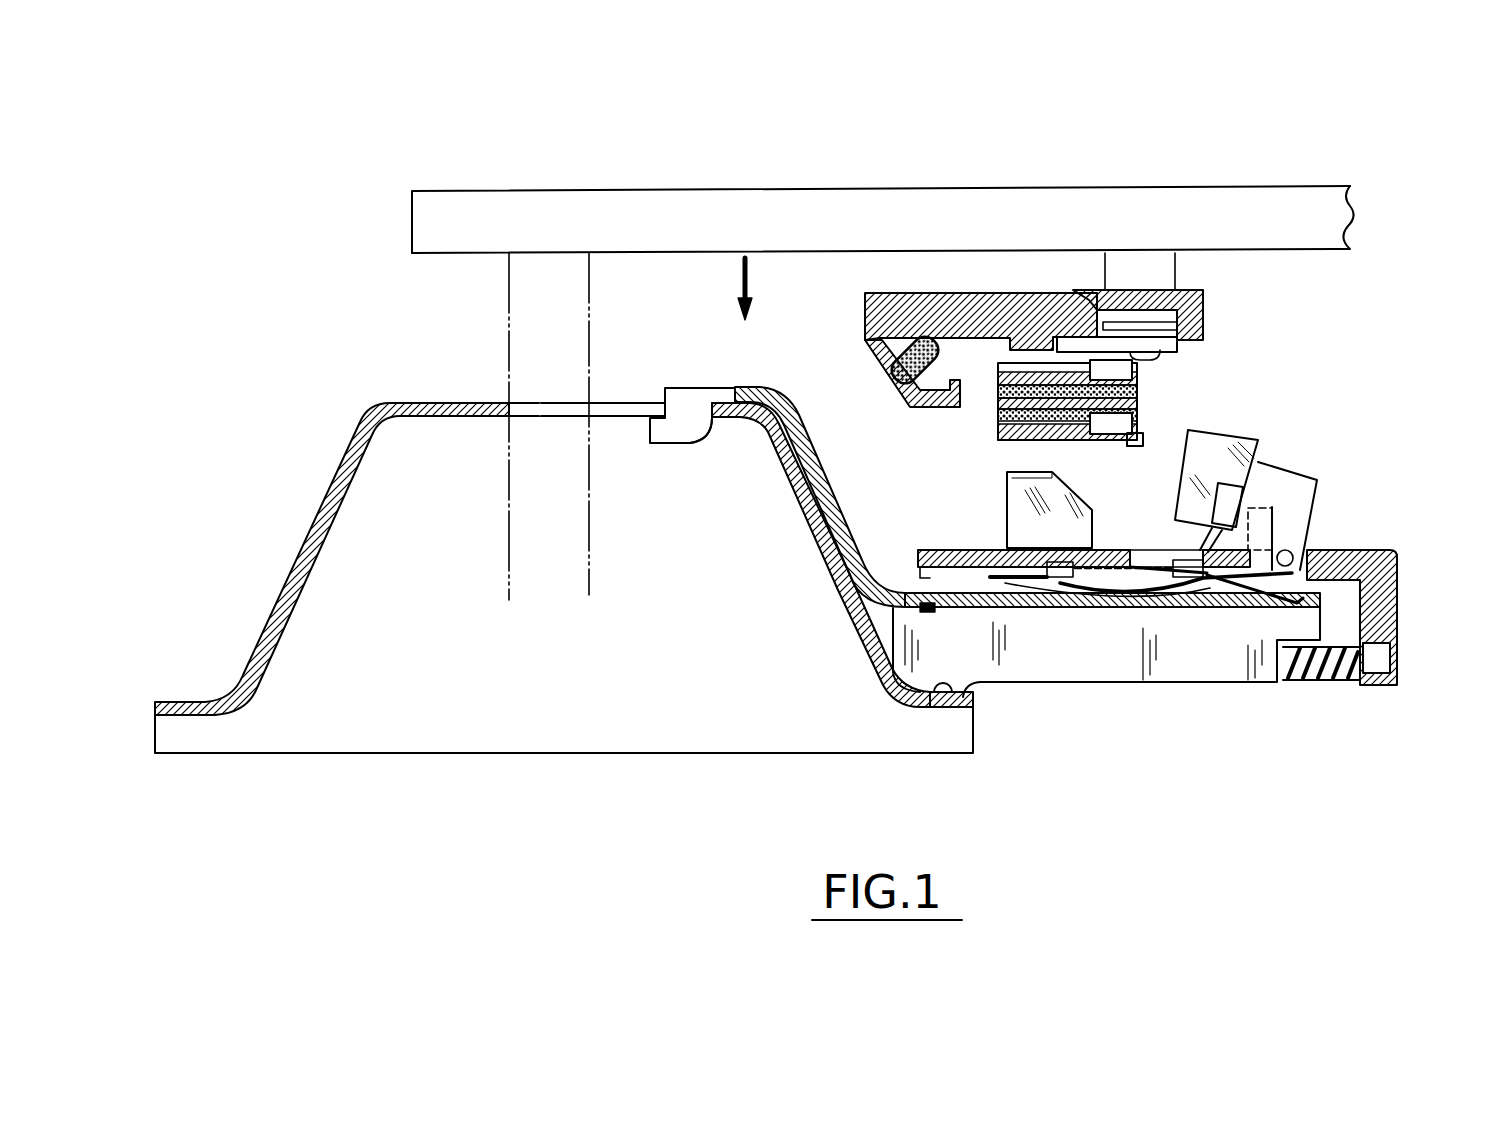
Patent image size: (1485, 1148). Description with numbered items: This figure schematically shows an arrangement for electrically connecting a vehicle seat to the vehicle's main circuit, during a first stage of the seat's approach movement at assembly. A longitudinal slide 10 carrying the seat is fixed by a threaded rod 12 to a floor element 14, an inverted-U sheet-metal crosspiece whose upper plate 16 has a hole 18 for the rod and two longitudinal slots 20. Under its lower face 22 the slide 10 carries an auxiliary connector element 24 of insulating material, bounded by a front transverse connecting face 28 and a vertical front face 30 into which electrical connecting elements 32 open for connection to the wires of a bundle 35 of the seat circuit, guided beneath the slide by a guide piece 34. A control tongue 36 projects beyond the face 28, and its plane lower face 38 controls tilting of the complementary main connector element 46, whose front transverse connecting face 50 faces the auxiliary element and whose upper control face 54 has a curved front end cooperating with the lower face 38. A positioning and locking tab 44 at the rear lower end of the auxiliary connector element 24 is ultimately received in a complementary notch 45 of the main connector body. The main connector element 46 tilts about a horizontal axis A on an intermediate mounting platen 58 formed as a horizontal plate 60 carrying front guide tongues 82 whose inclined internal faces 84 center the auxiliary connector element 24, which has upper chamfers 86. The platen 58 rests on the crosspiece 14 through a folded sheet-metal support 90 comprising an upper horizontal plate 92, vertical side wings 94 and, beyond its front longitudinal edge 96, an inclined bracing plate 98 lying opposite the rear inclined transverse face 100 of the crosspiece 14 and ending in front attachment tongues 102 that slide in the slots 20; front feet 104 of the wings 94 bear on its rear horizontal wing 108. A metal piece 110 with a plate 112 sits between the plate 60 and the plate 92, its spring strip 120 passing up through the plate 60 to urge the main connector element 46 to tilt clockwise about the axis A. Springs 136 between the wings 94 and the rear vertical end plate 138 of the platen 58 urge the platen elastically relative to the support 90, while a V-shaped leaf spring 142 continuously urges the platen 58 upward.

The longitudinal slide 10 is at (930, 208).
The threaded rod 12 is at (509, 282).
The element of the vehicle floor 14 is at (232, 616).
The plate 16 is at (470, 403).
The hole 18 is at (540, 410).
The slots 20 is at (642, 408).
The lower face 22 is at (1338, 250).
The auxiliary connector element 24 is at (1150, 397).
The front transverse connecting face 28 is at (1142, 405).
The front face for electrical connection 30 is at (997, 409).
The electrical connecting elements 32 is at (1040, 428).
The guide piece 34 is at (997, 310).
The bundle 35 is at (895, 345).
The control tongue 36 is at (1192, 350).
The plane lower face 38 is at (1150, 348).
The positioning and locking tab 44 is at (1134, 452).
The complementary notches 45 is at (1186, 503).
The main connector element 46 is at (1335, 494).
The front transverse connecting face 50 is at (1182, 472).
The upper control face 54 is at (1266, 435).
The intermediate mounting platen 58 is at (1403, 551).
The horizontal plate 60 is at (846, 598).
The front tongues 82 is at (1108, 608).
The internal face 84 is at (1000, 548).
The upper chamfers 86 is at (1005, 484).
The folded sheet-metal support 90 is at (1100, 692).
The upper horizontal plate 92 is at (1068, 608).
The vertical side wings 94 is at (1246, 682).
The front longitudinal edge 96 is at (872, 628).
The inclined upper bracing plate 98 is at (803, 467).
The rear inclined transverse face 100 is at (810, 513).
The front attachment tongues 102 is at (690, 446).
The front feet 104 is at (901, 690).
The rear horizontal longitudinal wing 108 is at (946, 702).
The metal piece 110 is at (976, 702).
The plate 112 is at (1143, 682).
The strip forming a spring 120 is at (1300, 518).
The springs 136 is at (1340, 680).
The rear vertical end plate 138 is at (1393, 641).
The intermediate spring 142 is at (1205, 602).
The horizontal axis A is at (1298, 548).